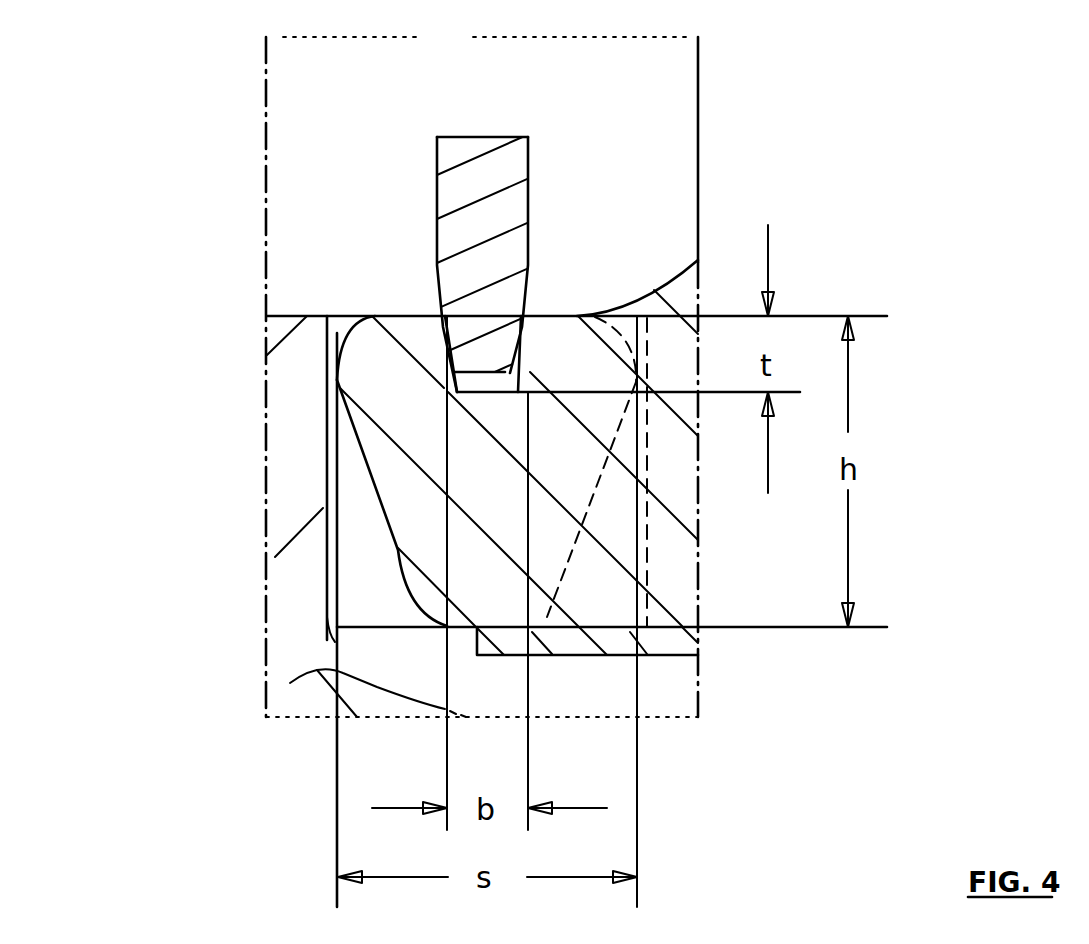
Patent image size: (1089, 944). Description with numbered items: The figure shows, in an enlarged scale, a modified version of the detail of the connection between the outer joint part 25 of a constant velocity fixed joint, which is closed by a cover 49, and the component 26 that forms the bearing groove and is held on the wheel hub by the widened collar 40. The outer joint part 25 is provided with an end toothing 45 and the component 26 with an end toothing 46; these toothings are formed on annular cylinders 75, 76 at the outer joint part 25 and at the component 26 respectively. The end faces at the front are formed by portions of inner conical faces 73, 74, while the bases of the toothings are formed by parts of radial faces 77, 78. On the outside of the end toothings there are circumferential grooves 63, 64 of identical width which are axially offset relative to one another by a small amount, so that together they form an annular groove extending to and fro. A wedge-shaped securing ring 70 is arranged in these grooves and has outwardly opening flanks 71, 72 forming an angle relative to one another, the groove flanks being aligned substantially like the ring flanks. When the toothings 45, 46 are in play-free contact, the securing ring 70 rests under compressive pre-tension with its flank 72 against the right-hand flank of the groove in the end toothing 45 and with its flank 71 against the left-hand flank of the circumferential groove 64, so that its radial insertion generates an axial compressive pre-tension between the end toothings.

The outer joint part 25 is at (690, 510).
The component 26 is at (280, 497).
The collar 40 is at (292, 683).
The end toothing 45 is at (627, 304).
The end toothing 46 is at (348, 316).
The cover 49 is at (680, 643).
The circumferential groove 63 is at (531, 310).
The circumferential groove 64 is at (443, 315).
The securing ring 70 is at (481, 237).
The flank 71 is at (528, 177).
The flank 72 is at (437, 177).
The inner conical face 73 is at (397, 553).
The inner conical face 74 is at (567, 572).
The annular cylinder 75 is at (664, 307).
The annular cylinder 76 is at (311, 333).
The radial face 77 is at (648, 598).
The radial face 78 is at (335, 644).